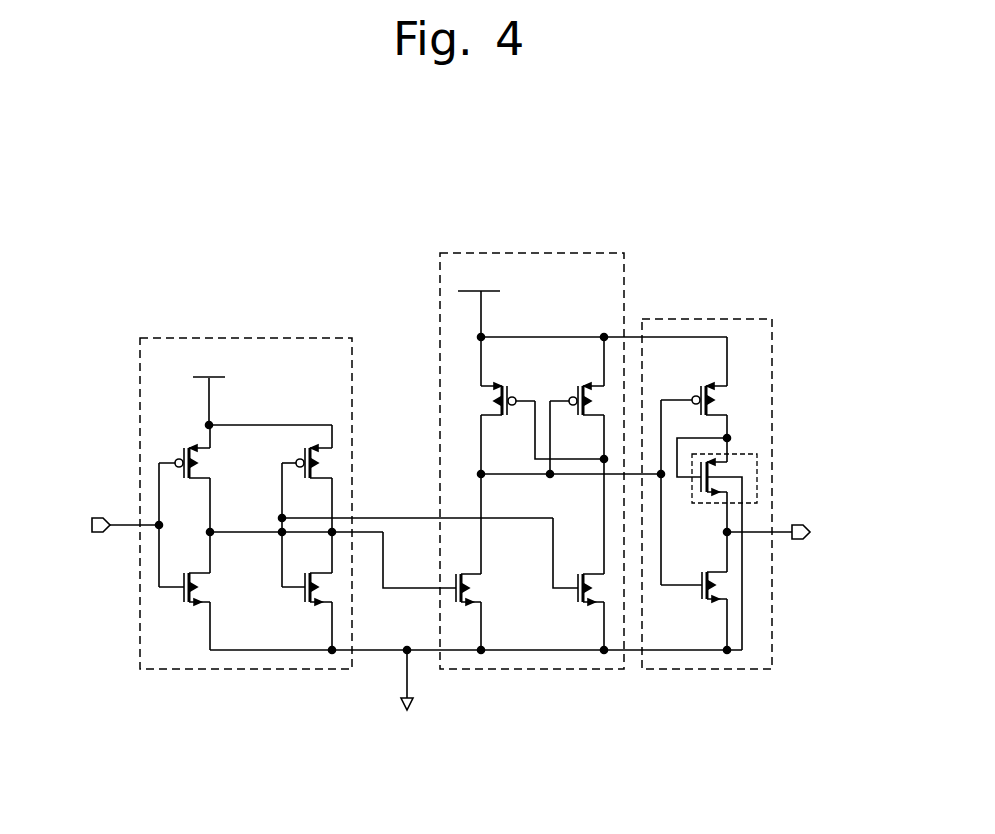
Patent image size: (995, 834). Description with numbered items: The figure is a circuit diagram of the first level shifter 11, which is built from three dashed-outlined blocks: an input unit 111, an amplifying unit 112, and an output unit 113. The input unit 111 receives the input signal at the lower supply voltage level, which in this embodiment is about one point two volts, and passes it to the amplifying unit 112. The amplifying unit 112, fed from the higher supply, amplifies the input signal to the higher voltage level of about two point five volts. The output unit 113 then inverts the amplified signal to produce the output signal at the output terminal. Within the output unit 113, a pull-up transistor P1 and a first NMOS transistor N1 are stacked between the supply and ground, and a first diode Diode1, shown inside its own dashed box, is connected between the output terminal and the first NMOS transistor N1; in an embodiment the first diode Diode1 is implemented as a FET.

The first level shifter 11 is at (747, 167).
The input unit 111 is at (290, 338).
The amplifying unit 112 is at (572, 253).
The output unit 113 is at (712, 319).
The first PMOS transistor P1 is at (694, 480).
The first NMOS transistor N1 is at (694, 592).
The first diode Diode1 is at (757, 470).